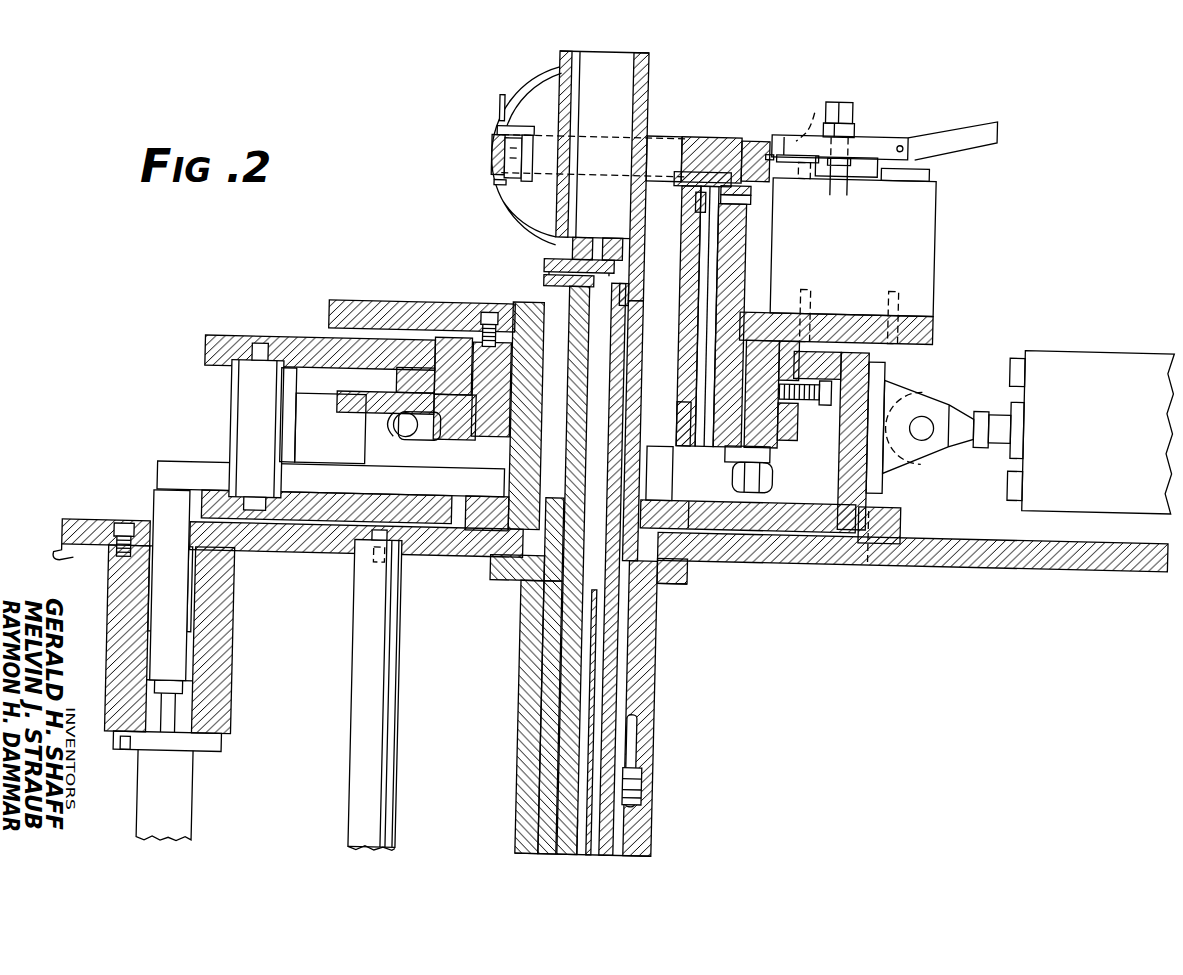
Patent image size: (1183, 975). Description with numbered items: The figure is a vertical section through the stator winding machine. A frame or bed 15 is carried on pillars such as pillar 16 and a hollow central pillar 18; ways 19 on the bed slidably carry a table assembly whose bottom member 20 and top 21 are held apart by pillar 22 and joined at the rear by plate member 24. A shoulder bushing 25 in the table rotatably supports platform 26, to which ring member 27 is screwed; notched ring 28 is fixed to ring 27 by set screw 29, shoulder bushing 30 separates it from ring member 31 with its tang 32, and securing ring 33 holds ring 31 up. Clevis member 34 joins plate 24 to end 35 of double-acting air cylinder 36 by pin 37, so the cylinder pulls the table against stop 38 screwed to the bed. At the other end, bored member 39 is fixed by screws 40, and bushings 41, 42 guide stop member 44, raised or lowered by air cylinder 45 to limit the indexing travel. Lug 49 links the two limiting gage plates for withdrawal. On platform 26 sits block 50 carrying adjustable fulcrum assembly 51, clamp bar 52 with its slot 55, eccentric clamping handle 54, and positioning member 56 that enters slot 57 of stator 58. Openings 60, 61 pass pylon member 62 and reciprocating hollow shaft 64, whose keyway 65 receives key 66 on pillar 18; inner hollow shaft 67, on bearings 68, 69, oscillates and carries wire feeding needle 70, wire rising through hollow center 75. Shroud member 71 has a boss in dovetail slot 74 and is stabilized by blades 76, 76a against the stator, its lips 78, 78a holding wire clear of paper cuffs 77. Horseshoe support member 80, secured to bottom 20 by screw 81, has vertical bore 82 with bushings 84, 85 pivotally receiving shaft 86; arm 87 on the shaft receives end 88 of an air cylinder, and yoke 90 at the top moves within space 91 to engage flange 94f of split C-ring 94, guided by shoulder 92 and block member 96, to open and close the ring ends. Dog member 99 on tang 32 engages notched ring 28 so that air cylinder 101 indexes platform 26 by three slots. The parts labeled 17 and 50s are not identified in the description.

The frame or bed 15 is at (443, 550).
The pillar 16 is at (357, 702).
The screw 17 is at (374, 555).
The central pillar 18 is at (660, 680).
The ways 19 is at (197, 471).
The bottom member 20 is at (300, 514).
The top or table portion 21 is at (300, 346).
The pillar 22 is at (230, 394).
The plate member 24 is at (852, 391).
The shoulder bushing 25 is at (448, 341).
The platform 26 is at (350, 309).
The ring member 27 is at (486, 315).
The notched ring 28 is at (477, 350).
The set screw 29 is at (822, 400).
The shoulder bushing 30 is at (480, 405).
The ring member 31 is at (440, 427).
The tang 32 is at (345, 419).
The securing ring 33 is at (462, 406).
The clevis member 34 is at (898, 461).
The end of air cylinder 35 is at (995, 405).
The air cylinder 36 is at (1075, 350).
The pin 37 is at (929, 431).
The stop 38 is at (902, 513).
The vertically bored member 39 is at (237, 656).
The screws 40 is at (120, 530).
The bushing 41 is at (199, 572).
The bushing 42 is at (152, 642).
The stop member 44 is at (160, 500).
The air cylinder 45 is at (182, 806).
The lug 49 is at (870, 560).
The block member 50 is at (930, 200).
The screws 50s is at (895, 295).
The adjustable fulcrum assembly 51 is at (845, 100).
The clamp bar 52 is at (779, 132).
The eccentric clamping handle 54 is at (962, 119).
The slot 55 is at (812, 118).
The positioning member 56 is at (785, 166).
The slot 57 is at (767, 132).
The stator 58 is at (748, 138).
The opening 60 is at (672, 583).
The opening 61 is at (512, 306).
The pylon member 62 is at (497, 552).
The hollow shaft 64 is at (620, 690).
The keyway 65 is at (640, 738).
The key 66 is at (649, 782).
The second hollow shaft 67 is at (600, 830).
The bearing 68 is at (618, 248).
The bearing 69 is at (622, 292).
The wire feeding needle 70 is at (548, 264).
The shroud member 71 is at (522, 82).
The dovetail slot 74 is at (556, 56).
The hollow center 75 is at (578, 680).
The blade 76 is at (490, 133).
The blade 76a is at (528, 177).
The cuffs 77 is at (485, 160).
The lip 78 is at (494, 98).
The lip 78a is at (492, 185).
The horseshoe shaped support member 80 is at (660, 482).
The screw 81 is at (700, 482).
The vertical bore 82 is at (695, 238).
The bushing 84 is at (713, 220).
The bushing 85 is at (680, 415).
The shaft 86 is at (728, 265).
The arm 87 is at (770, 452).
The end of driving means 88 is at (773, 475).
The yoke means 90 is at (690, 200).
The space 91 is at (735, 201).
The shoulder 92 is at (733, 186).
The split C-ring 94 is at (700, 135).
The flange 94f is at (690, 172).
The block member 96 is at (660, 135).
The dog member 99 is at (413, 380).
The air cylinder 101 is at (303, 404).